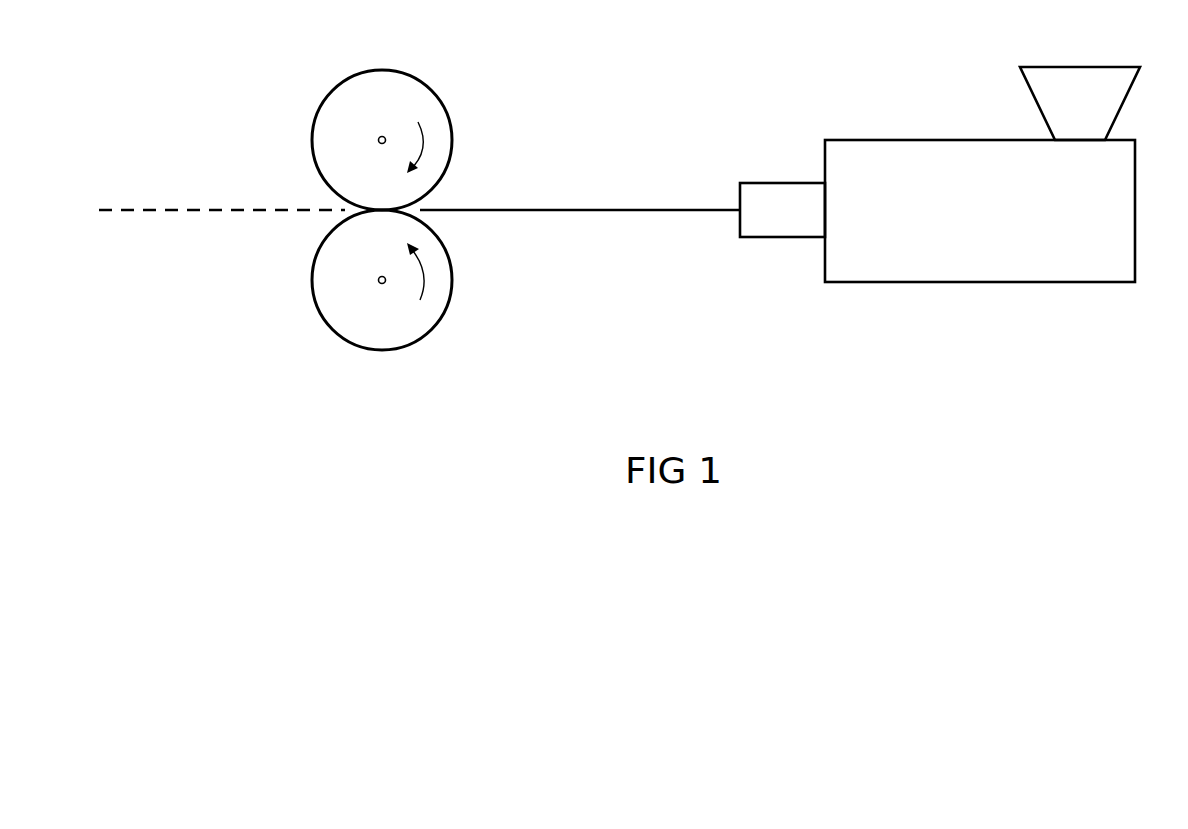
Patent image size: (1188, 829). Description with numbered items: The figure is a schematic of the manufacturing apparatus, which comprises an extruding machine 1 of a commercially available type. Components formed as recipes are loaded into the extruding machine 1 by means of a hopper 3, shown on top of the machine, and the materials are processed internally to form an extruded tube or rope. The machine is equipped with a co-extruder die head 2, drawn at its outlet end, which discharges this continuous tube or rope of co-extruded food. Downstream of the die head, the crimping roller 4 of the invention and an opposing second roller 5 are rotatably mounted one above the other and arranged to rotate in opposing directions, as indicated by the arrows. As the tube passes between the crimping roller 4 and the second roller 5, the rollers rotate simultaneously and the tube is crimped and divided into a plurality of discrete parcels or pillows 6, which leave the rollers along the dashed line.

The extruder 1 is at (975, 283).
The co-extruder die head 2 is at (762, 182).
The hopper 3 is at (1097, 65).
The crimping roller 4 is at (437, 98).
The second roller 5 is at (433, 330).
The discrete parcels or pillows 6 is at (243, 210).